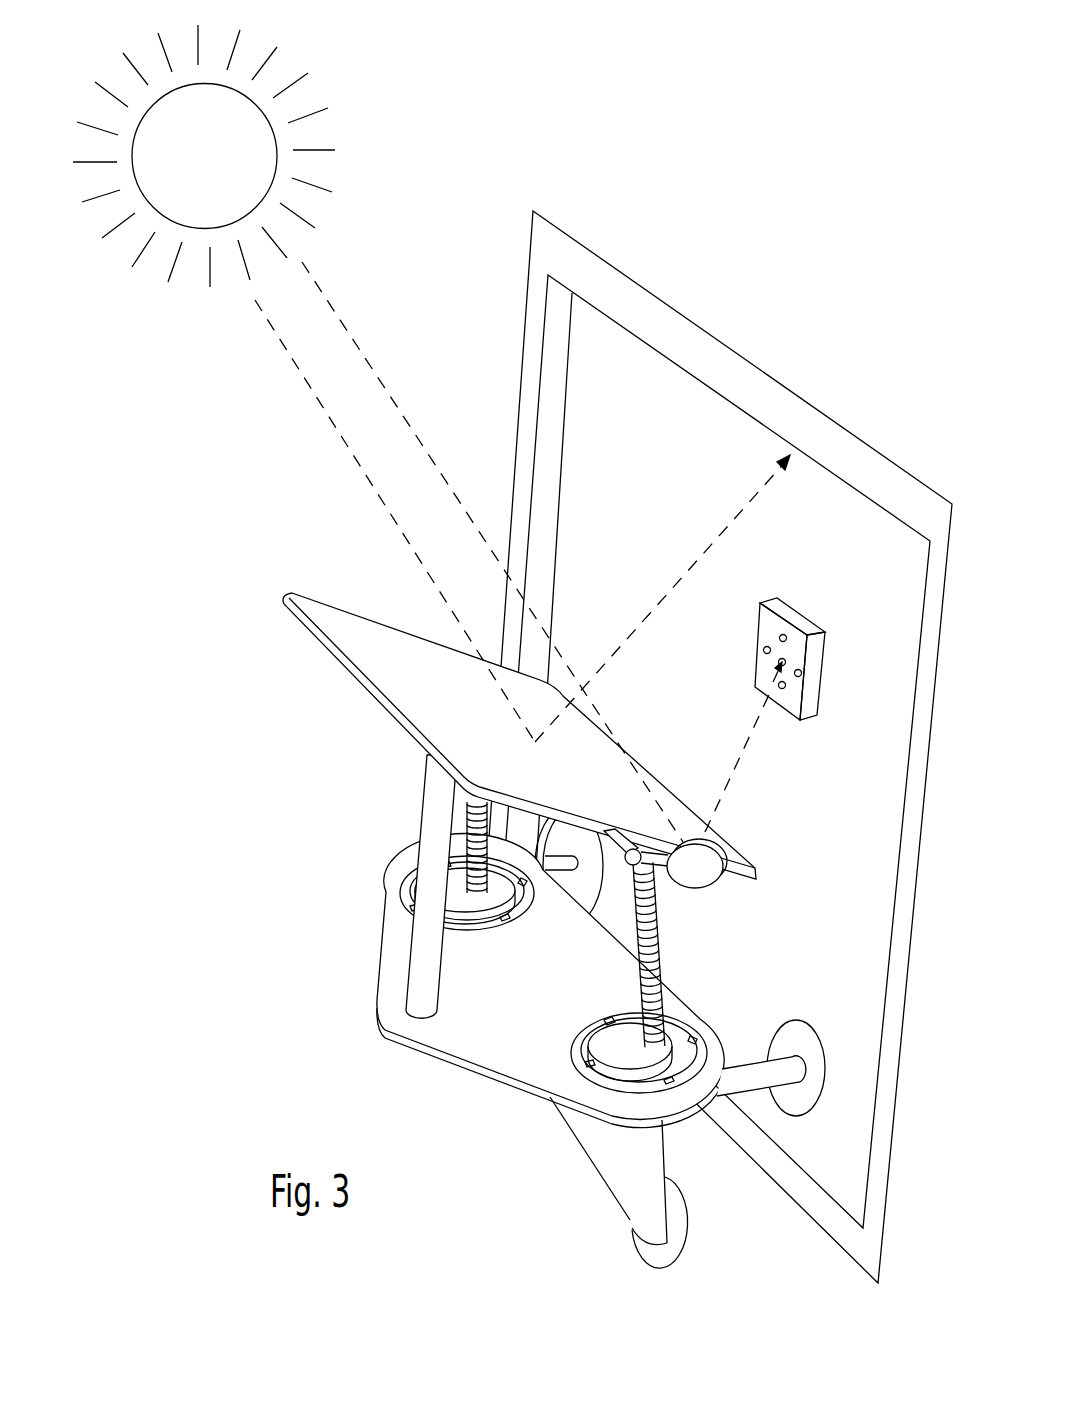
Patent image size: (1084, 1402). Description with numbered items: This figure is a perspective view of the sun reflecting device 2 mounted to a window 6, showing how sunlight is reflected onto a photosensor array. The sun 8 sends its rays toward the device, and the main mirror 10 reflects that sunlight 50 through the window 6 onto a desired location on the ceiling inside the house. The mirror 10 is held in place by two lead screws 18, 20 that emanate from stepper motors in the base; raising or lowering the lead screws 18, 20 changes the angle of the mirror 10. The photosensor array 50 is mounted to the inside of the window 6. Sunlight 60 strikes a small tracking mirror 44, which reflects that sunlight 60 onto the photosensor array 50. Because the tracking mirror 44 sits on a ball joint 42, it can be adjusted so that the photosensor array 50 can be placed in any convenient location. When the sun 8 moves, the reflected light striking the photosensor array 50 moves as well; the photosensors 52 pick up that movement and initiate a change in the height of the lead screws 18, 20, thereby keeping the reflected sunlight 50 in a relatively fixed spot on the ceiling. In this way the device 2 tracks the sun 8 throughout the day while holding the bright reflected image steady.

The sun reflecting device 2 is at (508, 1103).
The window 6 is at (905, 640).
The sun 8 is at (268, 143).
The mirror 10 is at (366, 662).
The lead screw 18 is at (476, 813).
The lead screw 20 is at (652, 927).
The ball joint 42 is at (634, 865).
The tracking mirror 44 is at (708, 878).
The photosensor array 50 is at (395, 398).
The photosensors 52 is at (801, 674).
The sunlight 60 is at (340, 432).